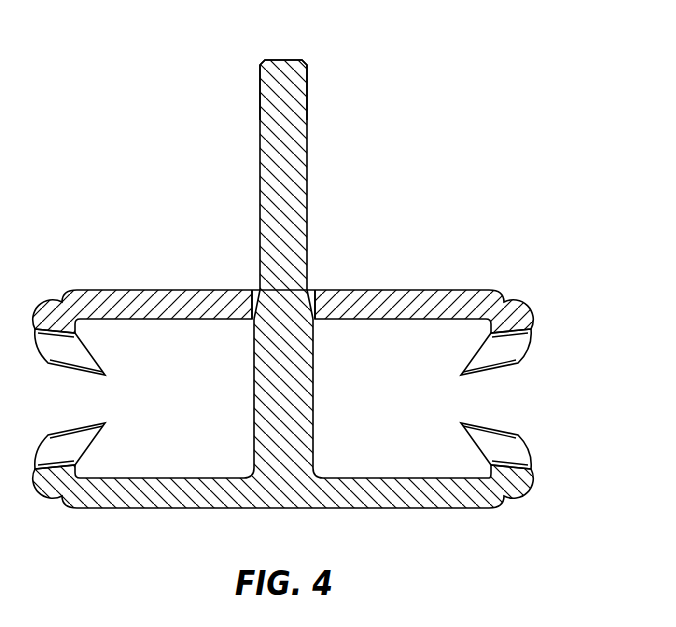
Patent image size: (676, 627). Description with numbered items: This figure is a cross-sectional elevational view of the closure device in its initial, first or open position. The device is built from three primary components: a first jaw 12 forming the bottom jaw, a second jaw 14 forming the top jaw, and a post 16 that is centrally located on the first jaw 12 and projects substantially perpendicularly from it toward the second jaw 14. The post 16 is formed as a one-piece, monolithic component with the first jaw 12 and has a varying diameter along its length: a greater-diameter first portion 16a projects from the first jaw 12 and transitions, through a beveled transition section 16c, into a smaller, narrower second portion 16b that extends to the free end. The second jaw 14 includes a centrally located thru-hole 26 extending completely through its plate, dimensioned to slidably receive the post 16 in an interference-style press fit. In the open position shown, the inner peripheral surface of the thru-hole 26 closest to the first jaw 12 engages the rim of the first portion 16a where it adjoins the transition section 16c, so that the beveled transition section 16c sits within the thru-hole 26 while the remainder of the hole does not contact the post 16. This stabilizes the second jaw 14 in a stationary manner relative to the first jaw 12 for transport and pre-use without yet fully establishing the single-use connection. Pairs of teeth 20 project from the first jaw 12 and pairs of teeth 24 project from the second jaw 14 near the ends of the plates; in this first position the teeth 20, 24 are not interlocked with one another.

The first jaw 12 is at (409, 521).
The second jaw 14 is at (444, 282).
The post 16 is at (285, 264).
The first portion 16a is at (314, 398).
The second portion 16b is at (260, 123).
The beveled transition section 16c is at (321, 298).
The teeth 20 is at (89, 442).
The teeth 24 is at (89, 355).
The thru-hole 26 is at (266, 300).